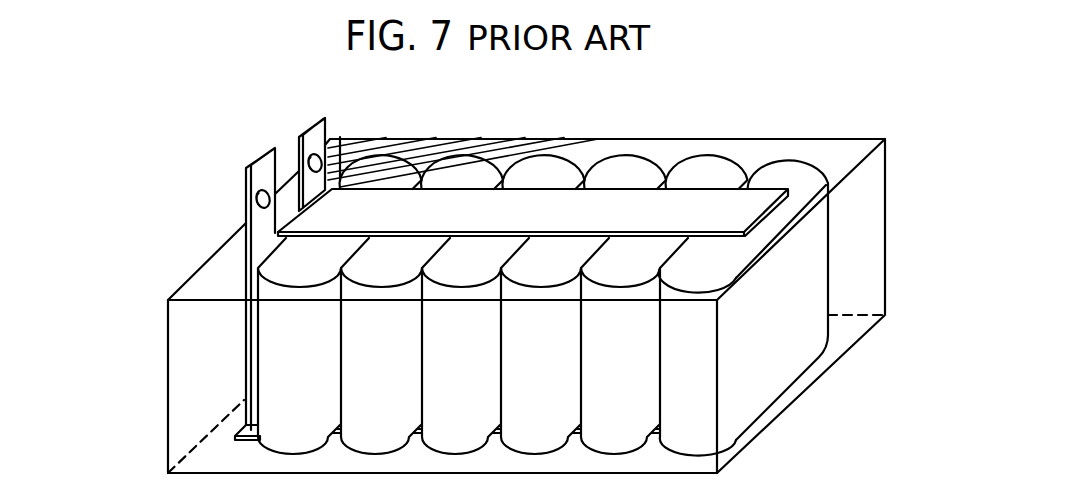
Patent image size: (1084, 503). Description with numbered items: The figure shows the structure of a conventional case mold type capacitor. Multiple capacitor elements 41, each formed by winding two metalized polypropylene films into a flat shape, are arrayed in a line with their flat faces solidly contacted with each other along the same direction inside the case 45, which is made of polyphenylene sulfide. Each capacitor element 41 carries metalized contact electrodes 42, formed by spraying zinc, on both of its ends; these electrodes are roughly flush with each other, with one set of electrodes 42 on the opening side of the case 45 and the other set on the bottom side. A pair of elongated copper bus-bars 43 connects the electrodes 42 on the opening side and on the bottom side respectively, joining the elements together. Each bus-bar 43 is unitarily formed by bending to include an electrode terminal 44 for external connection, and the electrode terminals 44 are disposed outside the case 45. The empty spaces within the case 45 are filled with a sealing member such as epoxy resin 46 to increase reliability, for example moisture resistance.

The capacitor element 41 is at (792, 352).
The metalized contact electrode 42 is at (790, 178).
The bus-bar 43 is at (630, 198).
The electrode terminal 44 is at (313, 135).
The case 45 is at (168, 375).
The epoxy resin 46 is at (425, 155).